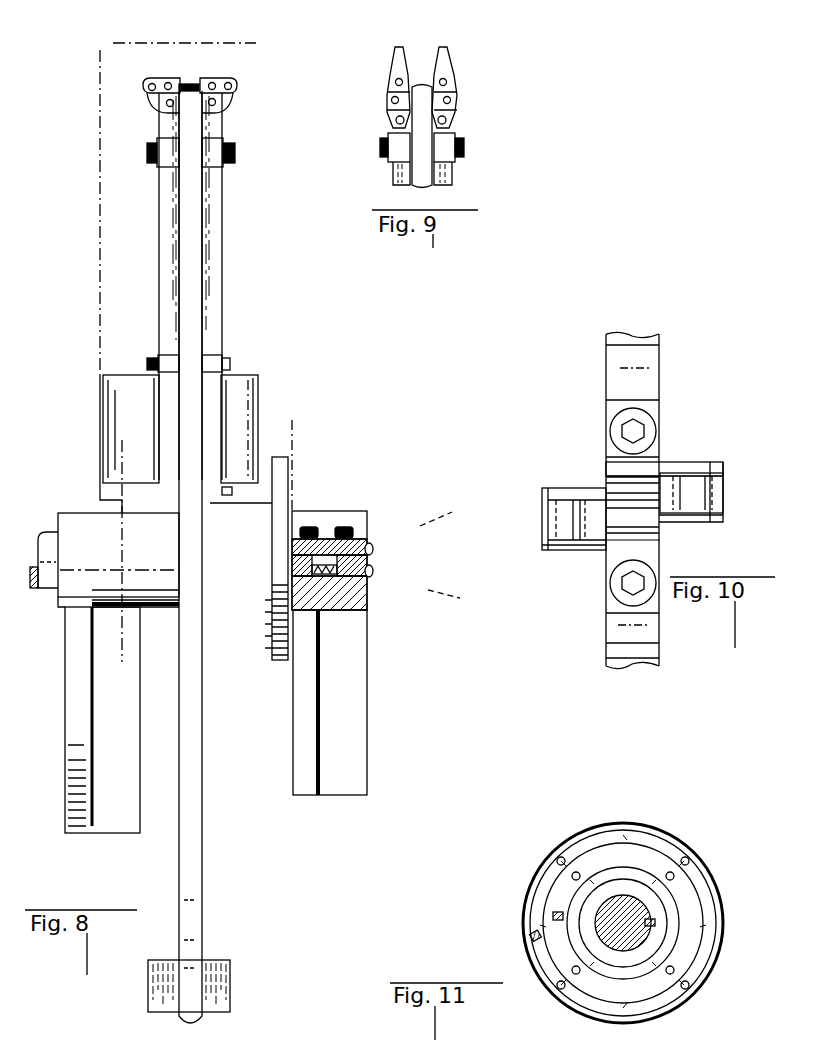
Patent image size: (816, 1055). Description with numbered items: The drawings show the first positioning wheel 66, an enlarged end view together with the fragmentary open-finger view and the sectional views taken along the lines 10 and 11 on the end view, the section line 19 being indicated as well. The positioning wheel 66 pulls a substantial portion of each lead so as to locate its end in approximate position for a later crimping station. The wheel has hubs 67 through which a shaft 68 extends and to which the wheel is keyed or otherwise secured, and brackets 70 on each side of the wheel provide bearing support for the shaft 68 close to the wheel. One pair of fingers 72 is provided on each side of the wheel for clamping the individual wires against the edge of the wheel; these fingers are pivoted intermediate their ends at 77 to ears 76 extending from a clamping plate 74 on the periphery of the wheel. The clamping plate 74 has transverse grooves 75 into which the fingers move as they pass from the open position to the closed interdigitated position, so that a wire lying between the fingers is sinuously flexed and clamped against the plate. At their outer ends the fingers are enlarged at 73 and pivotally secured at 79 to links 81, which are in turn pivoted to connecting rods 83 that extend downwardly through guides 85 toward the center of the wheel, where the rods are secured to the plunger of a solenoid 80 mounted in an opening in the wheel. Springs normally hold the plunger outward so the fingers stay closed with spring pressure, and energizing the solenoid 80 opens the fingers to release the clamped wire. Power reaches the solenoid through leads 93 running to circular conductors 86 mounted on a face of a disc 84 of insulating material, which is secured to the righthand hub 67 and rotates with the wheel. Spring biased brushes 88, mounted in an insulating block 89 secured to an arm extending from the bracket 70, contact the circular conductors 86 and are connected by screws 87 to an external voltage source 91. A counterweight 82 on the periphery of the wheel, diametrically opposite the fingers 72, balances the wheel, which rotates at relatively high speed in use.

In FIG. 8, the section line 10— 10 is at (242, 36).
In FIG. 8, the section line 11— 11 is at (287, 422).
In FIG. 8, the section line 19 is at (91, 65).
In FIG. 8, the first positioning wheel 66 is at (202, 914).
In FIG. 10, the first positioning wheel 66 is at (652, 662).
In FIG. 8, the hubs 67 is at (164, 594).
In FIG. 8, the shaft 68 is at (44, 574).
In FIG. 11, the shaft 68 is at (628, 938).
In FIG. 8, the brackets 70 is at (66, 740).
In FIG. 8, the fingers 72 is at (158, 84).
In FIG. 9, the fingers 72 is at (398, 74).
In FIG. 10, the fingers 72 is at (676, 465).
In FIG. 8, the enlarged outer ends of fingers 73 is at (150, 96).
In FIG. 10, the clamping plate 74 is at (607, 606).
In FIG. 10, the transverse grooves 75 is at (606, 476).
In FIG. 10, the ears 76 is at (678, 495).
In FIG. 8, the finger pivot 77 is at (169, 85).
In FIG. 9, the finger pivot 77 is at (395, 84).
In FIG. 8, the pivotal connection to links 79 is at (149, 88).
In FIG. 9, the pivotal connection to links 79 is at (391, 100).
In FIG. 8, the solenoid 80 is at (255, 390).
In FIG. 8, the links 81 is at (164, 106).
In FIG. 9, the links 81 is at (392, 120).
In FIG. 8, the counterweight 82 is at (160, 1000).
In FIG. 8, the connecting rods 83 is at (162, 288).
In FIG. 9, the connecting rods 83 is at (396, 178).
In FIG. 8, the disc 84 is at (272, 656).
In FIG. 11, the disc 84 is at (723, 906).
In FIG. 8, the guides 85 is at (162, 160).
In FIG. 9, the guides 85 is at (388, 148).
In FIG. 11, the circular conductors 86 is at (616, 862).
In FIG. 8, the screws 87 is at (375, 543).
In FIG. 8, the brushes 88 is at (300, 571).
In FIG. 11, the brushes 88 is at (530, 936).
In FIG. 8, the insulating block 89 is at (370, 556).
In FIG. 8, the external voltage source 91 is at (376, 534).
In FIG. 8, the leads 93 is at (244, 488).